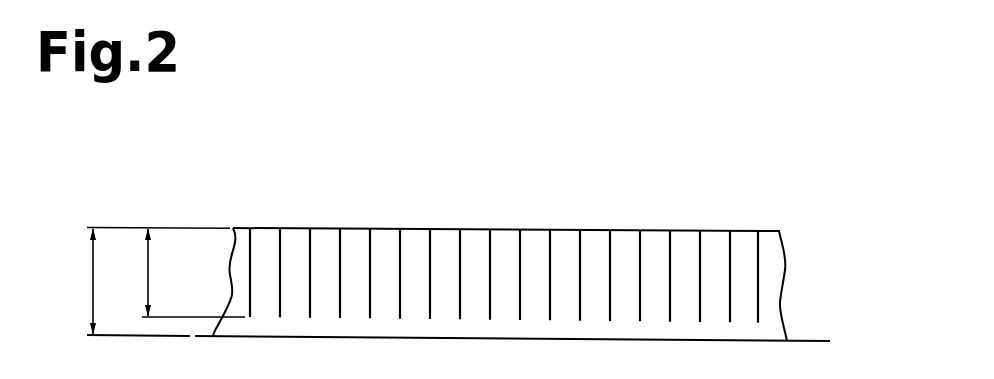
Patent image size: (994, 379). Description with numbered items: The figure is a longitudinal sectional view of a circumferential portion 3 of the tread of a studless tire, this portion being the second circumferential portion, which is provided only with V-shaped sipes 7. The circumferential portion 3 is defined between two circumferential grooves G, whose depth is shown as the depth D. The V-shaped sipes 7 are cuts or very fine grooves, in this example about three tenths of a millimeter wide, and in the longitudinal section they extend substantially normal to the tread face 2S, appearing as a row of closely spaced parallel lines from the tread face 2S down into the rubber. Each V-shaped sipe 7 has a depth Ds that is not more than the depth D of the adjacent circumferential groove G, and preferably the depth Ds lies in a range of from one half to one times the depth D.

The V-shaped sipe 7 is at (313, 250).
The tread face 2S is at (587, 230).
The circumferential portion 3 is at (712, 231).
The circumferential groove G is at (760, 340).
The depth of circumferential groove D is at (158, 282).
The depth of V-shaped sipe Ds is at (186, 272).